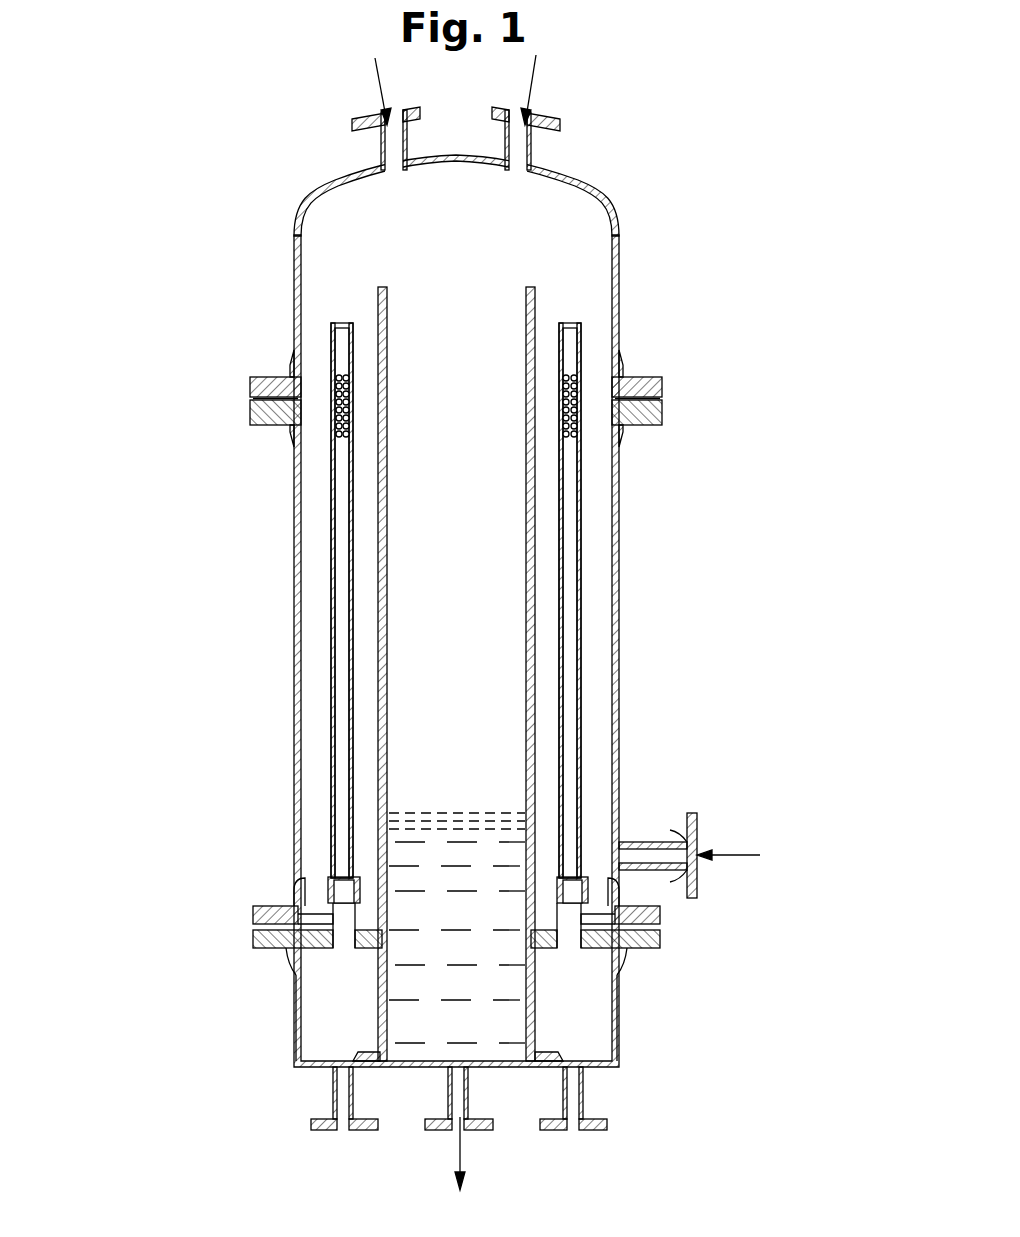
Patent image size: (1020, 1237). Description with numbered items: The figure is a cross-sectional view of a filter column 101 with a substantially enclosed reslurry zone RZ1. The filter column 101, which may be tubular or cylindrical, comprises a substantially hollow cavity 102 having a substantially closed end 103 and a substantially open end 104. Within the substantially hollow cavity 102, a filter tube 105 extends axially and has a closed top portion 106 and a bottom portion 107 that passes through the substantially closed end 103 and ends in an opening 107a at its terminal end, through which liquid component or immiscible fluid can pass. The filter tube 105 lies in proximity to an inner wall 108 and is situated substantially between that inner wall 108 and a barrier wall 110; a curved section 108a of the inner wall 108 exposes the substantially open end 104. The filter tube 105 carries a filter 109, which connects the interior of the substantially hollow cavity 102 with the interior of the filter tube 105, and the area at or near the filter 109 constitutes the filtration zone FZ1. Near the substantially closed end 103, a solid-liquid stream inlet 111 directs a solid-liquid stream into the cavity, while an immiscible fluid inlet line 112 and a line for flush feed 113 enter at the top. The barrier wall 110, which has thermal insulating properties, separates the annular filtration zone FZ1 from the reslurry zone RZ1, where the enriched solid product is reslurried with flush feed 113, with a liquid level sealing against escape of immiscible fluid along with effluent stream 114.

The filter column 101 is at (640, 645).
The substantially hollow cavity 102 is at (476, 218).
The substantially closed end 103 is at (600, 985).
The substantially open end 104 is at (590, 297).
The filter tube 105 is at (583, 560).
The top portion 106 is at (330, 341).
The bottom portion 107 is at (330, 862).
The opening 107a is at (344, 948).
The inner wall 108 is at (308, 284).
The substantially curved section 108a is at (305, 218).
The filter 109 is at (583, 420).
The barrier wall 110 is at (378, 492).
The solid-liquid stream inlet 111 is at (730, 850).
The immiscible fluid inlet line 112 is at (377, 88).
The flush feed 113 is at (532, 77).
The effluent stream 114 is at (458, 1153).
The filtration zone FZ1 is at (322, 325).
The reslurry zone RZ1 is at (477, 641).